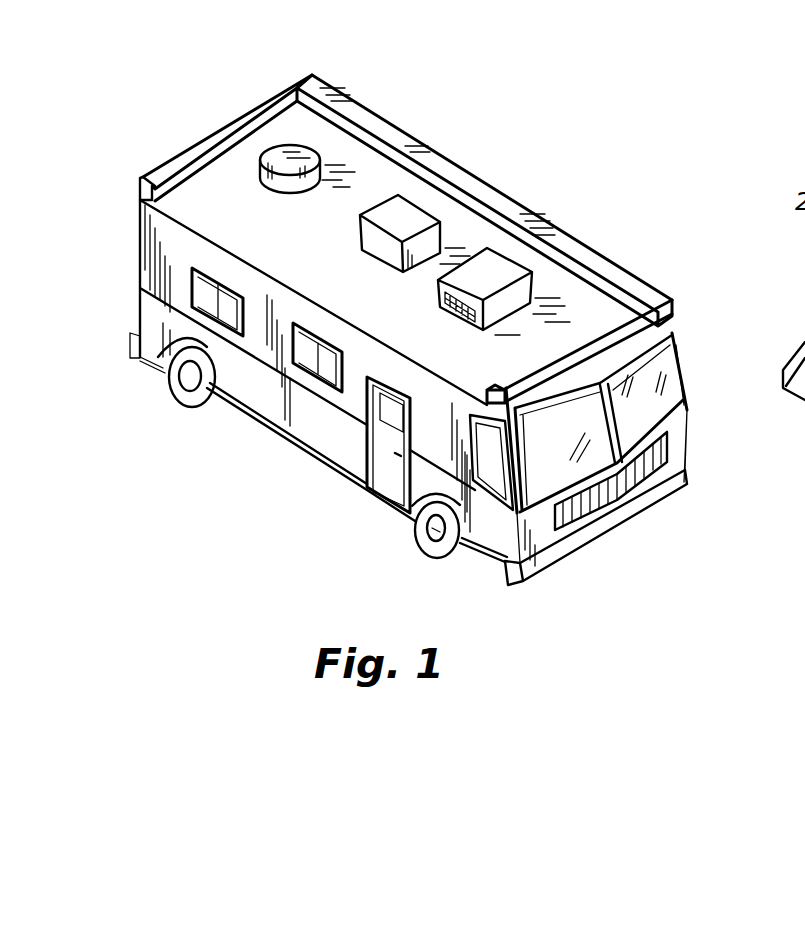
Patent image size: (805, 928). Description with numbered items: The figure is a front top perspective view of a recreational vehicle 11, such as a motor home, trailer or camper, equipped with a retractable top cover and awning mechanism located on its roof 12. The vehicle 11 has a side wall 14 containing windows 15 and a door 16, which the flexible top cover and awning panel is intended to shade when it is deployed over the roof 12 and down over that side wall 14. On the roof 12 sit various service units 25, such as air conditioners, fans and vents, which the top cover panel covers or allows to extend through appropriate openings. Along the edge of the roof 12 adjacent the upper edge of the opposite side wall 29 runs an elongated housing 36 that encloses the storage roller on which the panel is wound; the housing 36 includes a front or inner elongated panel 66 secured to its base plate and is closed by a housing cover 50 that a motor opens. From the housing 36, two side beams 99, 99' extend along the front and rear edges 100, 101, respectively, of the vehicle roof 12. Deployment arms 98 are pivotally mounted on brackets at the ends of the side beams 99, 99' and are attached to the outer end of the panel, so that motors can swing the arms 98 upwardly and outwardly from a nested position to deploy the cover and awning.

The vehicle 11 is at (652, 514).
The roof 12 is at (414, 313).
The side wall 14 is at (279, 410).
The windows 15 is at (313, 350).
The door 16 is at (385, 472).
The service units 25 is at (497, 272).
The side wall 29 is at (684, 418).
The housing 36 is at (642, 262).
The housing cover 50 is at (437, 158).
The inner elongated panel 66 is at (340, 107).
The deployment arms 98 is at (178, 187).
The side beam 99 is at (357, 506).
The side beam 99' is at (227, 113).
The front edge 100 is at (683, 362).
The rear edge 101 is at (142, 185).